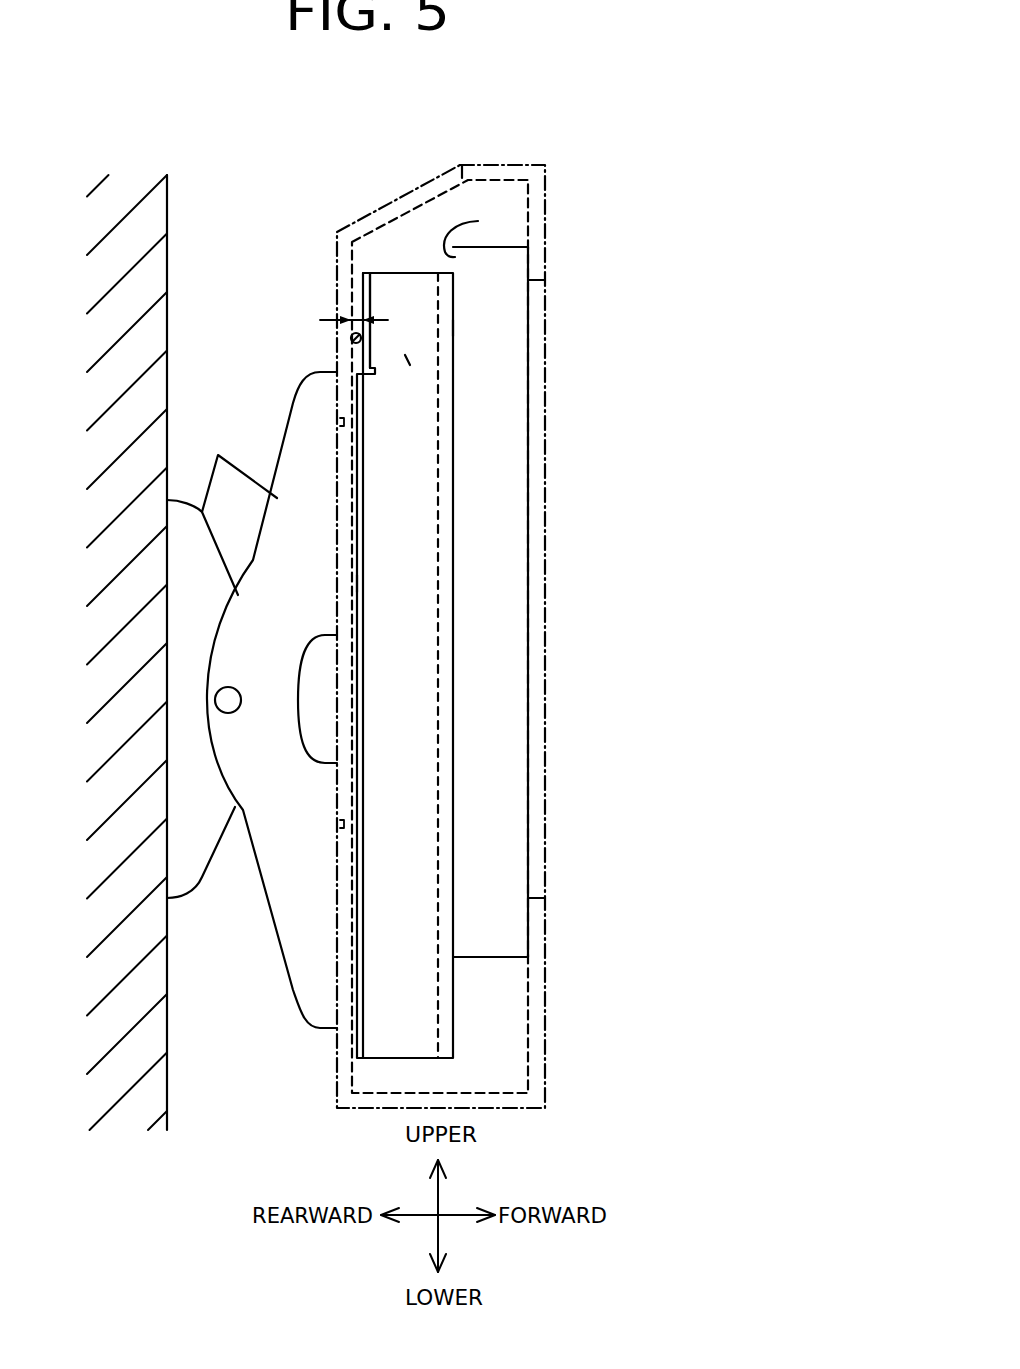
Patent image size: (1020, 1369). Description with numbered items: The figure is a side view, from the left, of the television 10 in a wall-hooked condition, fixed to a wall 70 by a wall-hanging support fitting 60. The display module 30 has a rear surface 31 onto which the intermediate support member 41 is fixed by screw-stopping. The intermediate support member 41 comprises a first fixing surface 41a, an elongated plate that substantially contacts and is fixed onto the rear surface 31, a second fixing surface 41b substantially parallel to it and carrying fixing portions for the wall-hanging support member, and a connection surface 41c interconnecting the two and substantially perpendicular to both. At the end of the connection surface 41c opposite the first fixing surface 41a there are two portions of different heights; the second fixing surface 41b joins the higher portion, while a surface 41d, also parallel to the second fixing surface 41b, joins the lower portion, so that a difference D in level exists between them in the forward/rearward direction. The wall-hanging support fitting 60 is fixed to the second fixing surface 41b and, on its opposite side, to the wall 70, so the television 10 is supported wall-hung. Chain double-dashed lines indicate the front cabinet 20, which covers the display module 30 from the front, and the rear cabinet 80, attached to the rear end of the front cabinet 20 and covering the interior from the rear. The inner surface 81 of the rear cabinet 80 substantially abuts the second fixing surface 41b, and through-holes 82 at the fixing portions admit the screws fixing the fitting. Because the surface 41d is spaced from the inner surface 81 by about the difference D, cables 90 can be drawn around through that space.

The television 10 is at (563, 1133).
The front cabinet 20 is at (515, 160).
The display module 30 is at (505, 488).
The rear surface 31 is at (478, 221).
The intermediate support member 41 is at (405, 273).
The first fixing surface 41a is at (452, 328).
The second fixing surface 41b is at (358, 583).
The connection surface 41c is at (407, 362).
The surface 41d is at (360, 290).
The wall-hanging support fitting 60 is at (252, 700).
The wall 70 is at (167, 210).
The rear cabinet 80 is at (383, 195).
The inner surface 81 is at (362, 238).
The through-holes 82 is at (332, 540).
The cables 90 is at (350, 338).
The difference in level D is at (357, 313).